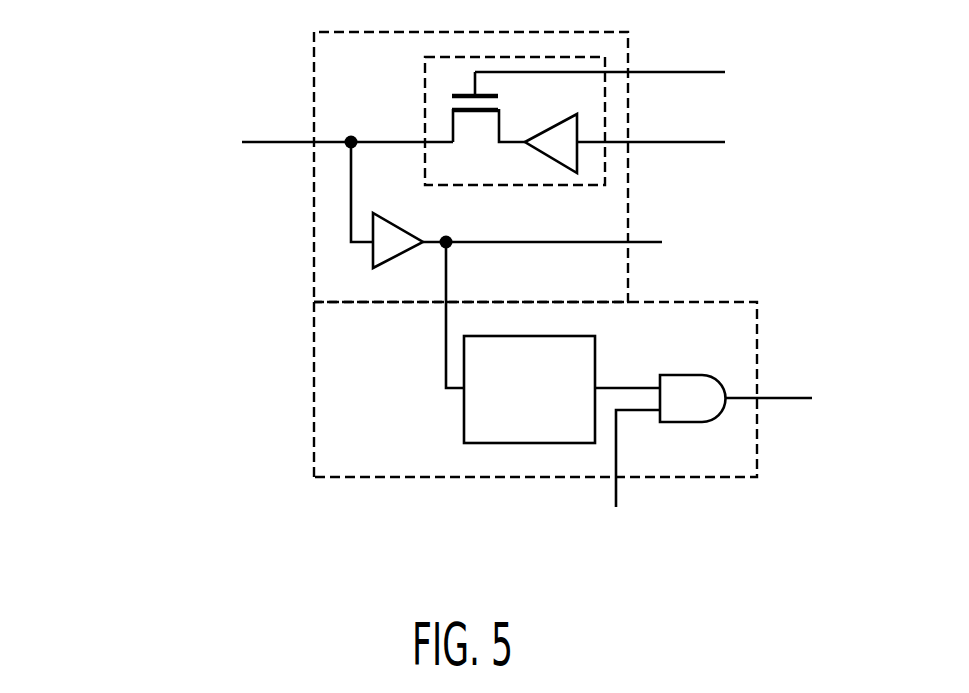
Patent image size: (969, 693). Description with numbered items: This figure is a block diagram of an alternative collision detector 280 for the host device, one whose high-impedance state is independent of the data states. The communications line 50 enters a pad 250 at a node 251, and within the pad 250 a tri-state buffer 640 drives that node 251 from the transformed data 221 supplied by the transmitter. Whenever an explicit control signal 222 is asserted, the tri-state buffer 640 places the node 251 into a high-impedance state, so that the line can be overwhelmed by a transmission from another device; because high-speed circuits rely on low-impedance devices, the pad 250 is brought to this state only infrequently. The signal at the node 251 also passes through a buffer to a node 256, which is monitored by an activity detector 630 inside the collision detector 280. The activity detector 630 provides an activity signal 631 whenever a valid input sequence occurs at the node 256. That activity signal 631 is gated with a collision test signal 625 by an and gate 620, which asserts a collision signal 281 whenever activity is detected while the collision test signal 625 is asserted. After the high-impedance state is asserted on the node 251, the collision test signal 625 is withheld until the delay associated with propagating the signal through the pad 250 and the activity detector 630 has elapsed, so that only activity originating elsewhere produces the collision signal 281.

The input/output line 50 is at (277, 142).
The pad 250 is at (357, 93).
The node 251 is at (372, 143).
The tri-state buffer 640 is at (475, 175).
The control signal 222 is at (628, 74).
The transformed data 221 is at (628, 144).
The node 256 is at (514, 242).
The collision detector 280 is at (356, 467).
The activity detector 630 is at (548, 423).
The activity signal 631 is at (621, 386).
The and gate 620 is at (686, 376).
The collision signal 281 is at (759, 396).
The collision test signal 625 is at (635, 595).